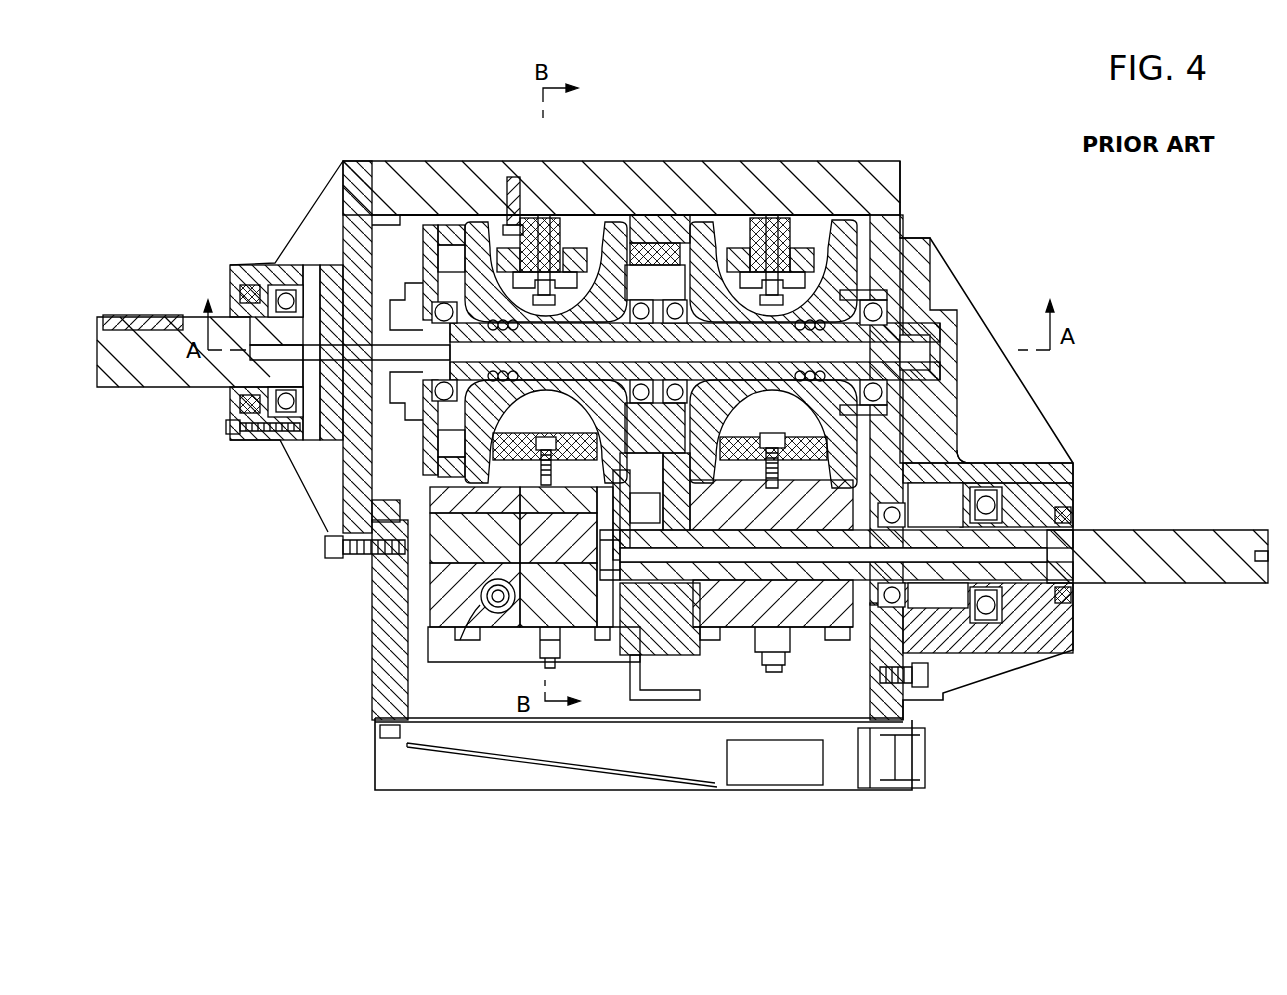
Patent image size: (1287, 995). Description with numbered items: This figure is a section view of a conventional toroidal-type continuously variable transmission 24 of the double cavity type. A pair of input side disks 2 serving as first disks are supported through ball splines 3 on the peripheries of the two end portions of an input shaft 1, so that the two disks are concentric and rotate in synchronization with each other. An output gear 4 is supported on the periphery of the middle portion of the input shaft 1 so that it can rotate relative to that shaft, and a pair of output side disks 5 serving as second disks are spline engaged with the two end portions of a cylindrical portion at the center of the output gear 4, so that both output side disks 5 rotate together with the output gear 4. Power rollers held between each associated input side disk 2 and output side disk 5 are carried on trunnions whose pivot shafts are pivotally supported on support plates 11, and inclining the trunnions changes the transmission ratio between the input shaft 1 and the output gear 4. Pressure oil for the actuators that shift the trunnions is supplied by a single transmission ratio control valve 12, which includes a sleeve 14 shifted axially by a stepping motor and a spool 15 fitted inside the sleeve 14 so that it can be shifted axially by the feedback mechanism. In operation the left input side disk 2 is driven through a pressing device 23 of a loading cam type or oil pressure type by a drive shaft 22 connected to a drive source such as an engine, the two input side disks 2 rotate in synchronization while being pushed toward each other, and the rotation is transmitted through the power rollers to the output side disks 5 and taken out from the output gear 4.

The input shaft 1 is at (590, 340).
The input side disk 2 is at (477, 232).
The ball spline 3 is at (500, 392).
The output gear 4 is at (660, 250).
The output side disk 5 is at (620, 238).
The support plate 11 is at (590, 250).
The transmission ratio control valve 12 is at (480, 586).
The sleeve 14 is at (490, 612).
The spool 15 is at (480, 605).
The drive shaft 22 is at (150, 375).
The pressing device 23 is at (440, 232).
The toroidal-type continuously variable transmission 24 is at (948, 203).